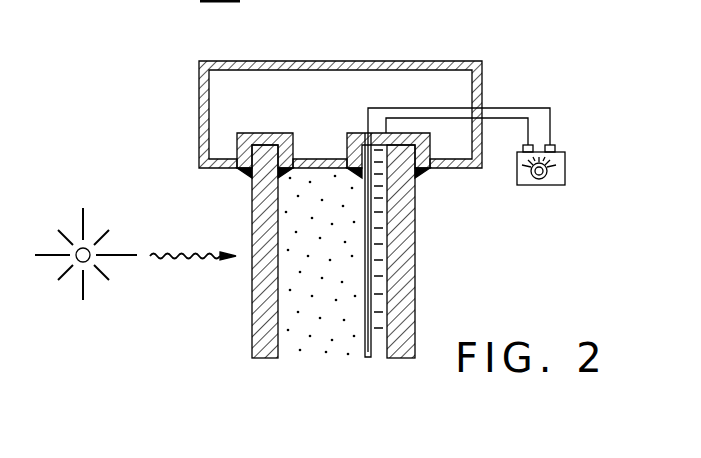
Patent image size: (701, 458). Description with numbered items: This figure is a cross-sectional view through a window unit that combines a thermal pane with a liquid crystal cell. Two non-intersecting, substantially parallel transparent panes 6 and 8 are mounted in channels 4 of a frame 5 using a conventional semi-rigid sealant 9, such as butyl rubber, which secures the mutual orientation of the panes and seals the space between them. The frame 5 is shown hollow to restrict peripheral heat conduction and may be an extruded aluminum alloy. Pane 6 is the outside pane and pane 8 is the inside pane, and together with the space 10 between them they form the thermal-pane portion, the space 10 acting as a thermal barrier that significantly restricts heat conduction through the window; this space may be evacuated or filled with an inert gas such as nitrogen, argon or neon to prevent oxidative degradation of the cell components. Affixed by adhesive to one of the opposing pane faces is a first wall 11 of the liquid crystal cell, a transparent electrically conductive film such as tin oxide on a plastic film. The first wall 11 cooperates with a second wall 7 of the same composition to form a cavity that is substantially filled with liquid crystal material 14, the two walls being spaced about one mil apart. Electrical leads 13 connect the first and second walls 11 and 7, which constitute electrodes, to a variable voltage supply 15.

The channels 4 is at (357, 135).
The frame 5 is at (467, 62).
The transparent pane 6 is at (253, 318).
The second wall 7 is at (366, 345).
The transparent pane 8 is at (416, 312).
The semi-rigid sealant 9 is at (249, 171).
The space 10 is at (307, 340).
The first wall 11 is at (378, 352).
The electrical leads 13 is at (512, 105).
The liquid crystal material 14 is at (378, 256).
The variable voltage supply 15 is at (567, 170).